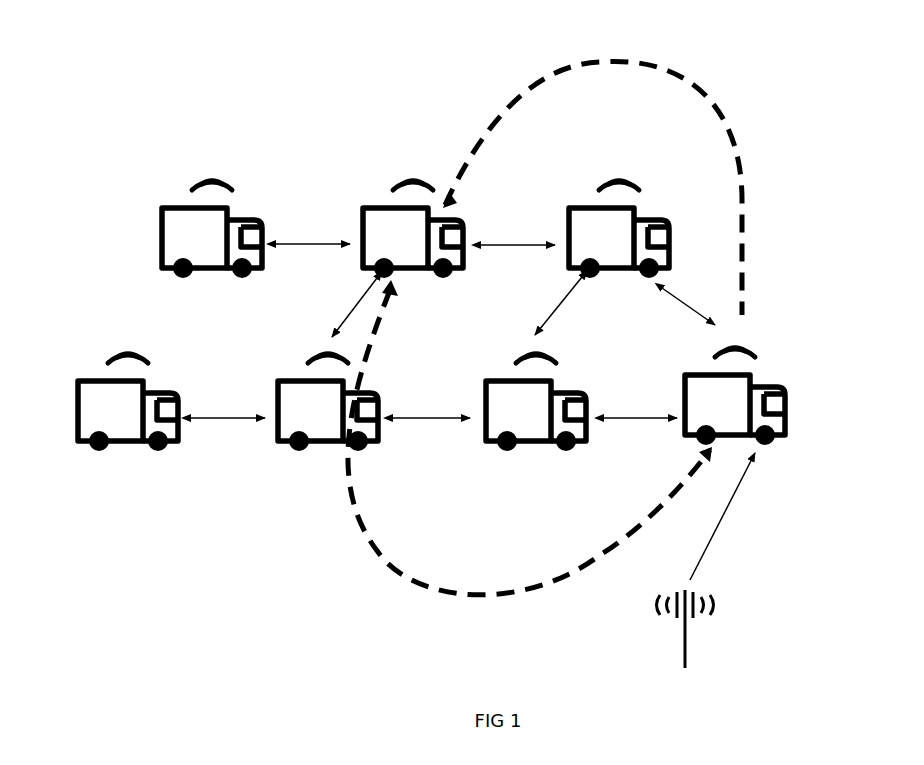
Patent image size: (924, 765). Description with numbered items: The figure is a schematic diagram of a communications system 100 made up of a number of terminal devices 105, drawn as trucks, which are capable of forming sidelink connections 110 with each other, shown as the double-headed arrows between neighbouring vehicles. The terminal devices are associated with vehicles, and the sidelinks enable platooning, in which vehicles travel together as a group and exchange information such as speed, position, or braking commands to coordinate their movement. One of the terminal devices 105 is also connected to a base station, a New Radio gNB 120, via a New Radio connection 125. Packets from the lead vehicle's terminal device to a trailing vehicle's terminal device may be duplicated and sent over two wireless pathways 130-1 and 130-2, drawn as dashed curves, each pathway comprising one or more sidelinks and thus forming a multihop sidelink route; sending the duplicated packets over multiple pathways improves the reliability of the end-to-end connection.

The communications system 100 is at (491, 59).
The terminal devices 105 is at (253, 187).
The sidelink connections 110 is at (350, 305).
The 5G NR gNB 120 is at (735, 603).
The 5G NR connection 125 is at (720, 527).
The first wireless pathway 130-1 is at (738, 172).
The second wireless pathway 130-2 is at (353, 515).